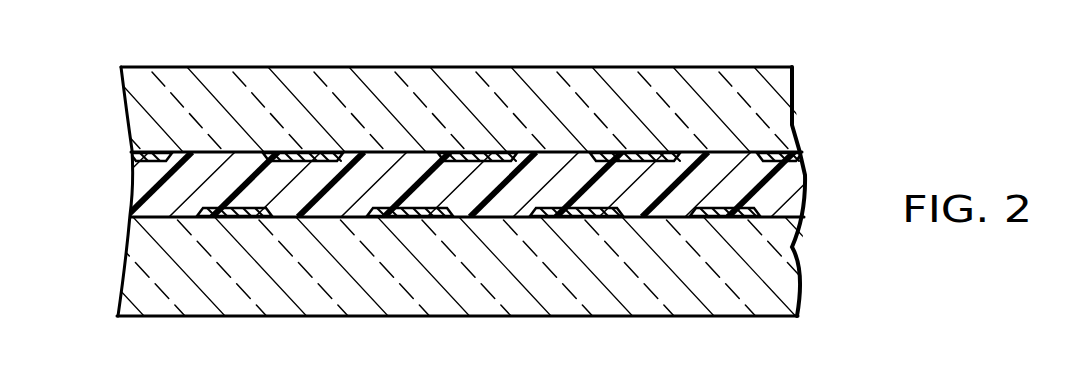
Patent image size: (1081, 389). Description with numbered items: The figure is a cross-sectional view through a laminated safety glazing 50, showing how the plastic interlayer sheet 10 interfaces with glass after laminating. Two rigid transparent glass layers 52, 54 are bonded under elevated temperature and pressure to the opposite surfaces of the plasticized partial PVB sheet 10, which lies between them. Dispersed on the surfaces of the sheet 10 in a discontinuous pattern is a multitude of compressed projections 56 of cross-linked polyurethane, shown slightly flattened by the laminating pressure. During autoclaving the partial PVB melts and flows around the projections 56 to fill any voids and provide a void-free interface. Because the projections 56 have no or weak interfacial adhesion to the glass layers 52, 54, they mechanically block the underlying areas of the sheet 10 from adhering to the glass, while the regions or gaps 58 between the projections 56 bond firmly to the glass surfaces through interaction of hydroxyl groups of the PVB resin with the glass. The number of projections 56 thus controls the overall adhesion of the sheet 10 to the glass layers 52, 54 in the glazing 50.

The plastic interlayer sheet 10 is at (790, 176).
The laminated safety glazing 50 is at (95, 151).
The glass layer 52 is at (416, 80).
The glass layer 54 is at (607, 307).
The compressed projections 56 is at (295, 152).
The gaps between projections 58 is at (557, 160).